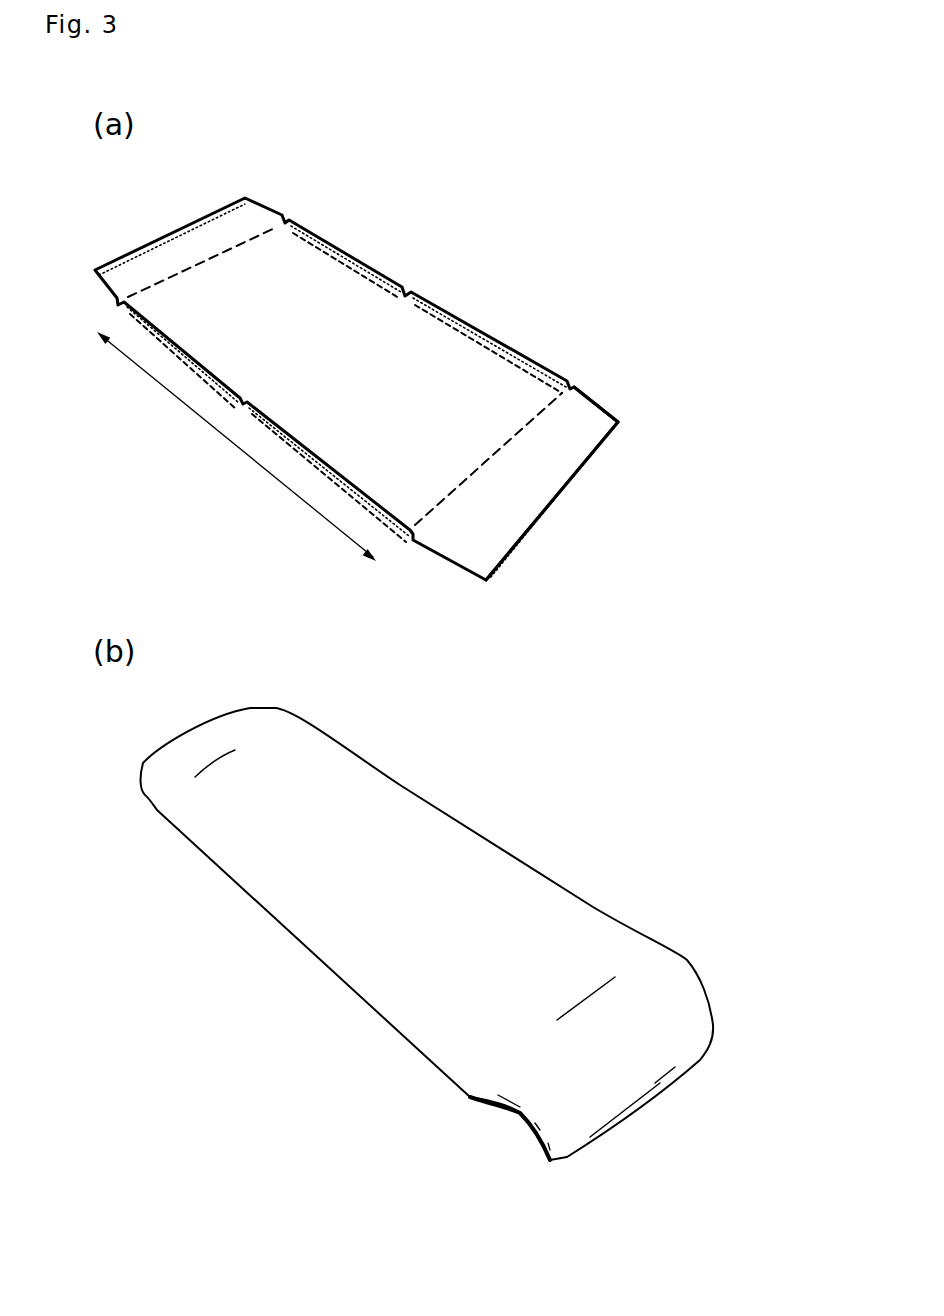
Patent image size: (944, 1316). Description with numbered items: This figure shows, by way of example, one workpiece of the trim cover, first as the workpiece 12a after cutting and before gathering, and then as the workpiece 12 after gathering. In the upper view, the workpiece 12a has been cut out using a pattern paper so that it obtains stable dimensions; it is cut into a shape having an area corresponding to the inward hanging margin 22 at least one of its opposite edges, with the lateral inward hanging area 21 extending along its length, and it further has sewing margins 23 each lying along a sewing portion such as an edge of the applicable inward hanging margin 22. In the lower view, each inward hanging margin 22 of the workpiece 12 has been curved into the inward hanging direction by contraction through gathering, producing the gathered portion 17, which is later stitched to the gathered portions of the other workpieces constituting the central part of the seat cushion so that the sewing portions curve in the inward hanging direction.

The workpiece (before gathering) 12a is at (488, 208).
The workpiece (after gathering) 12 is at (566, 806).
The gathered portion 17 is at (564, 1086).
The lateral inward hanging area 21 is at (267, 480).
The inward hanging margin 22 is at (570, 423).
The sewing margin 23 is at (613, 430).